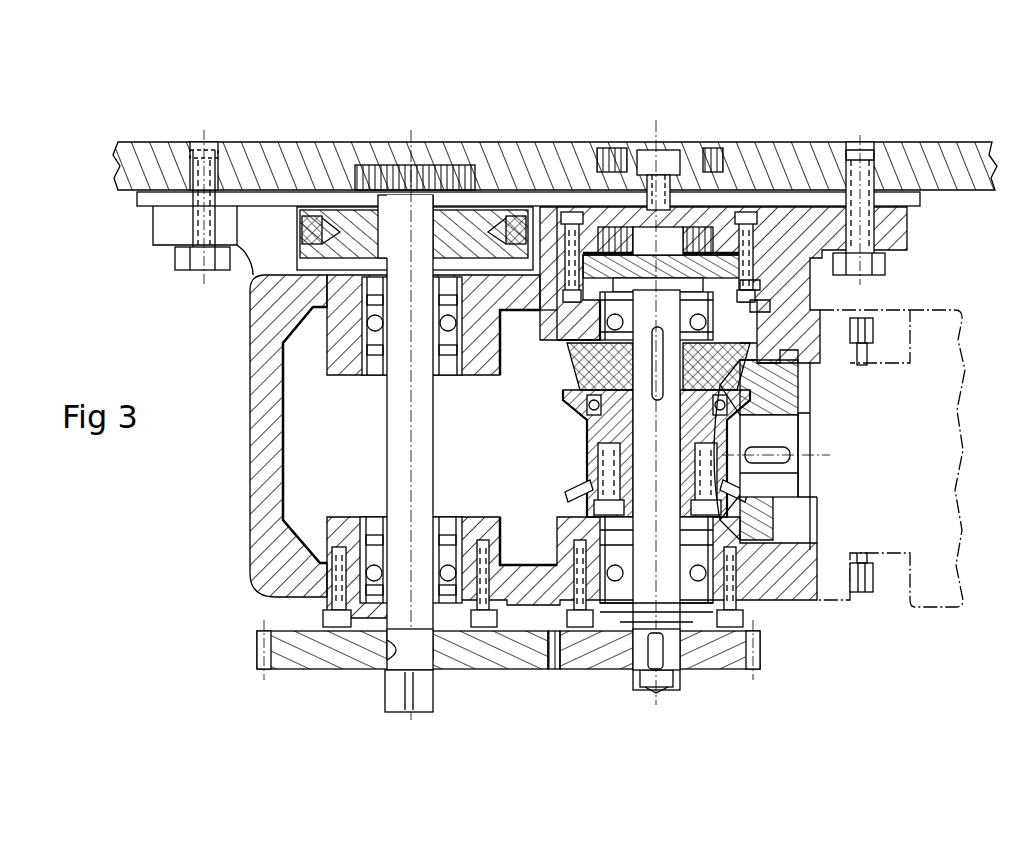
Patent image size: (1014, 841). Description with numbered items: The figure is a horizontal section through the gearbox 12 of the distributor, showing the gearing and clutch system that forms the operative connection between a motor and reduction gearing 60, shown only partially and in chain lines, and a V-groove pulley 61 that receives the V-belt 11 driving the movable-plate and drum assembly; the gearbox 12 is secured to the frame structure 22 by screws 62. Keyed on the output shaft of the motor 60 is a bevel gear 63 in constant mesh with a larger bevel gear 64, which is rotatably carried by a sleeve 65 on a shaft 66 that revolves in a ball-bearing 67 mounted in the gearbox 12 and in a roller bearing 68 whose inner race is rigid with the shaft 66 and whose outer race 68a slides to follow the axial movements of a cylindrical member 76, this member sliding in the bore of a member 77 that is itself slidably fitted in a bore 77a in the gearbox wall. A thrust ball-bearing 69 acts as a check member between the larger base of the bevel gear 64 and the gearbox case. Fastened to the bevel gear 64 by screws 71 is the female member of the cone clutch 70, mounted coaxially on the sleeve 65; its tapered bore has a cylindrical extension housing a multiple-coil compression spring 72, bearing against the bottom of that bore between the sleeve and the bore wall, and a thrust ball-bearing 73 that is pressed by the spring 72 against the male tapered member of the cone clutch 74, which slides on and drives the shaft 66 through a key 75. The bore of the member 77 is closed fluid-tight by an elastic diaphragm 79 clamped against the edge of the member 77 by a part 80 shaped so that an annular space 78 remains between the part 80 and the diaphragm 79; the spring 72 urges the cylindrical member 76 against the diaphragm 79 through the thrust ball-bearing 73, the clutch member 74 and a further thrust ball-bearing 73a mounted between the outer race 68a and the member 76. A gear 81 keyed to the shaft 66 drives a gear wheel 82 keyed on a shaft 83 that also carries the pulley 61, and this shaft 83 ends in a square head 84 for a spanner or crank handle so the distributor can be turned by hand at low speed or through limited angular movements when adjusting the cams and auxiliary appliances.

The V-belt 11 is at (297, 242).
The gearbox 12 is at (247, 527).
The frame structure 22 is at (490, 160).
The motor and reduction gearing 60 is at (923, 442).
The V-groove pulley 61 is at (347, 225).
The screws 62 is at (213, 205).
The bevel gear 63 is at (793, 410).
The bevel gear 64 is at (587, 503).
The sleeve 65 is at (593, 452).
The shaft 66 is at (715, 530).
The ball-bearing 67 is at (630, 580).
The roller bearing 68 is at (573, 340).
The outer race 68a is at (577, 313).
The thrust ball-bearing 69 is at (597, 527).
The female member of the cone clutch 70 is at (570, 367).
The screws 71 is at (587, 482).
The multiple-coil compression spring 72 is at (597, 423).
The thrust ball-bearing 73 is at (755, 507).
The thrust ball-bearing 73a is at (750, 363).
The male tapered member of the cone clutch 74 is at (760, 378).
The key 75 is at (653, 397).
The cylindrical member 76 is at (742, 210).
The member 77 is at (770, 285).
The bore 77a is at (762, 313).
The annular space 78 is at (613, 233).
The elastic diaphragm 79 is at (742, 235).
The part 80 is at (647, 243).
The gear 81 is at (730, 667).
The gear wheel 82 is at (490, 653).
The shaft 83 is at (403, 443).
The square head 84 is at (390, 690).